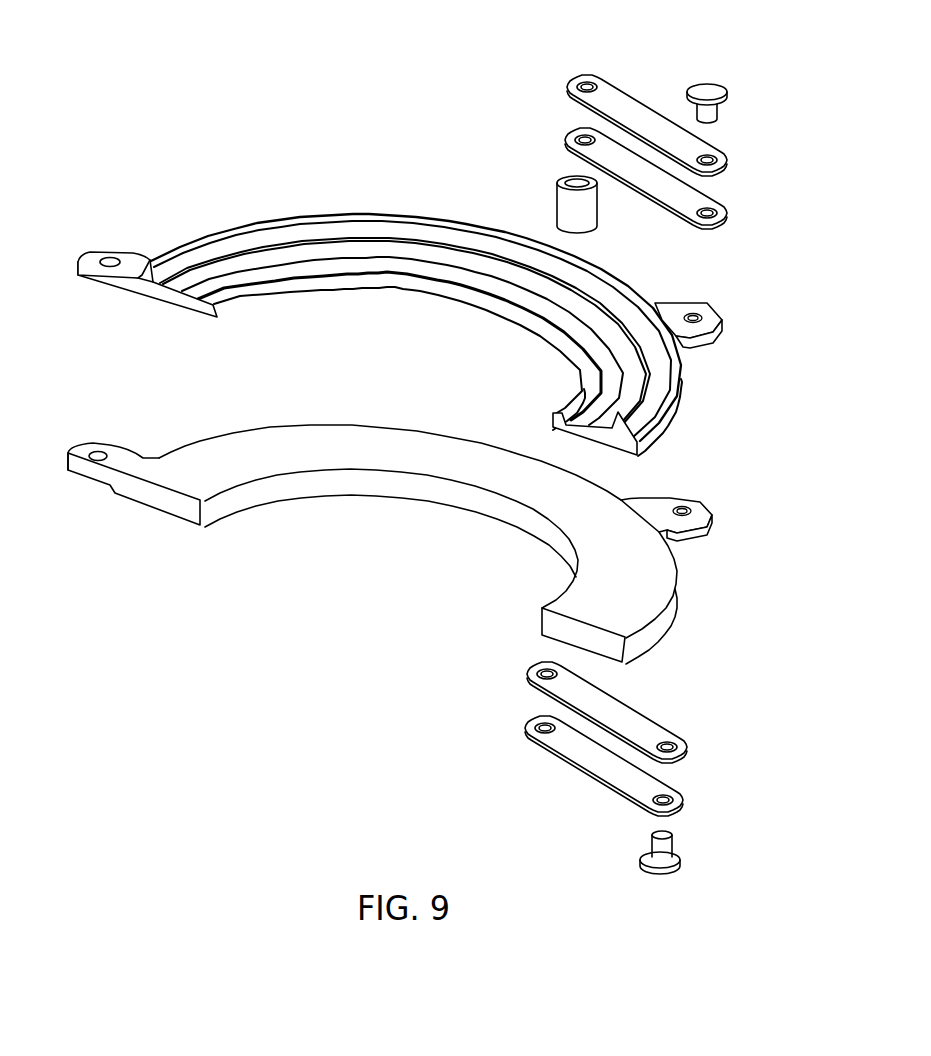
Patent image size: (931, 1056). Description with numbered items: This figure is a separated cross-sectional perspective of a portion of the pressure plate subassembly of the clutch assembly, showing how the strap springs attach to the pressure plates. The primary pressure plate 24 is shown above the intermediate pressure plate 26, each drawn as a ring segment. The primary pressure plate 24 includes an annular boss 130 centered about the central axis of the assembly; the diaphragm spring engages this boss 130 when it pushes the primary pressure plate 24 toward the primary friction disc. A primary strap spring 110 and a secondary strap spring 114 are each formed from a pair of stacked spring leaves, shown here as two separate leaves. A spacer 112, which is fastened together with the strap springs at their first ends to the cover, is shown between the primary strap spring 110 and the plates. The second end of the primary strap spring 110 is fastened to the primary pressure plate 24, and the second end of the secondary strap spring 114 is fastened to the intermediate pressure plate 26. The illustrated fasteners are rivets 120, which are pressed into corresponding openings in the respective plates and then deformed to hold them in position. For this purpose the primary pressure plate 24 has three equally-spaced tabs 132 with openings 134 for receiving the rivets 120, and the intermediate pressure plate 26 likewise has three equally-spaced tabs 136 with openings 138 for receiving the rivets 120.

The primary pressure plate 24 is at (420, 297).
The intermediate pressure plate 26 is at (378, 497).
The primary strap spring 110 is at (556, 52).
The spacer 112 is at (556, 200).
The secondary strap spring 114 is at (522, 650).
The rivet 120 is at (709, 88).
The annular boss 130 is at (617, 278).
The tab 132 is at (110, 256).
The opening 134 is at (696, 315).
The tab 136 is at (688, 540).
The opening 138 is at (686, 509).